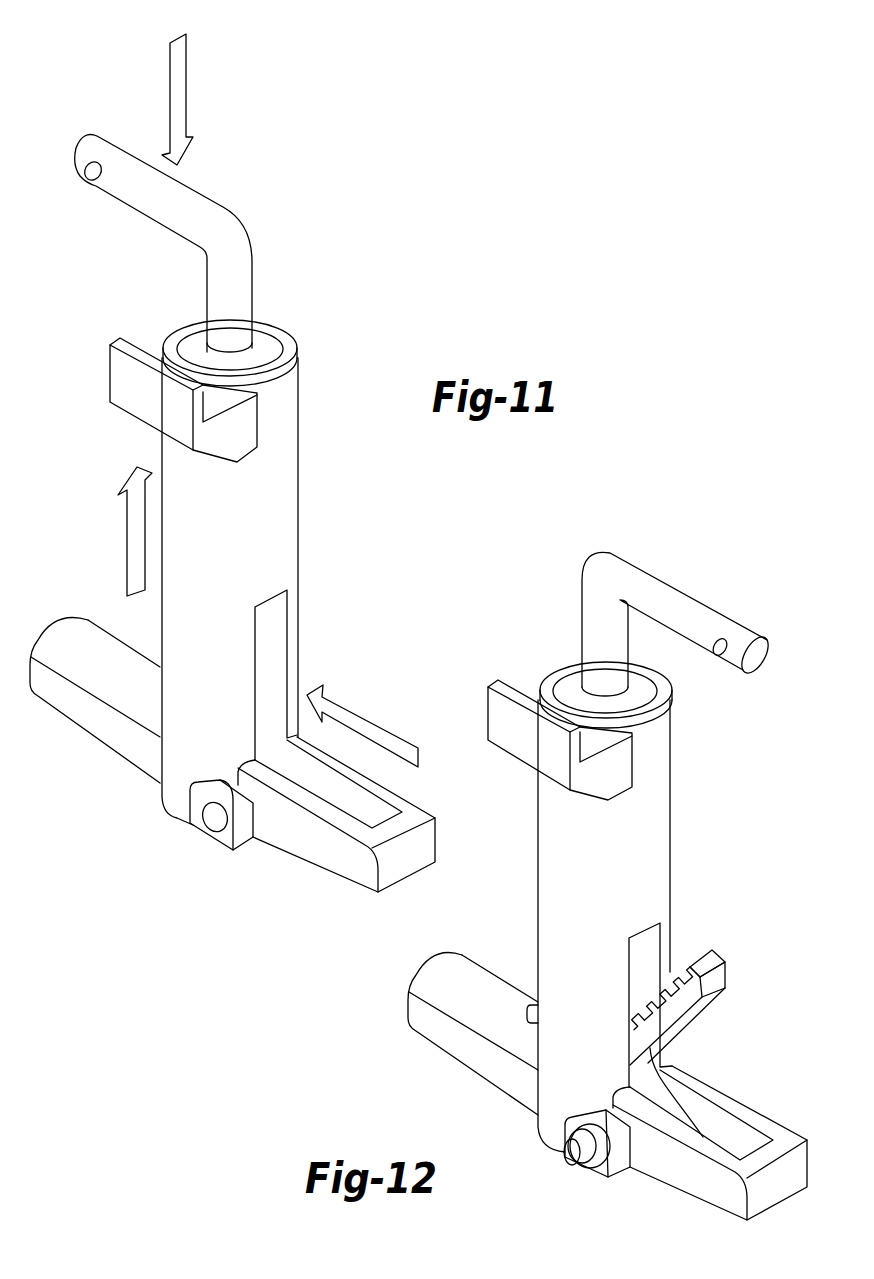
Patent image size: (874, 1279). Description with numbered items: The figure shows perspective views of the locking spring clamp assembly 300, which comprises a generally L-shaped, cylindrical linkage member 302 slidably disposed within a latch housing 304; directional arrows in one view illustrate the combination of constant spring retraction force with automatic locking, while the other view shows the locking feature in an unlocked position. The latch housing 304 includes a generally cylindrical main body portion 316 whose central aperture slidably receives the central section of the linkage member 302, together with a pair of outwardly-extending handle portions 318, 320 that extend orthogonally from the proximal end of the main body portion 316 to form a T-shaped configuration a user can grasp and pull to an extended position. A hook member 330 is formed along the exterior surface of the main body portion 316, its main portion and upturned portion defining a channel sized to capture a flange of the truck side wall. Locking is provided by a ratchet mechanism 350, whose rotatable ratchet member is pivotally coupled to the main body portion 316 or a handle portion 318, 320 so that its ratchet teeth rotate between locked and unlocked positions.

In FIG. 11, the locking spring clamp assembly 300 is at (95, 431).
In FIG. 11, the linkage member 302 is at (258, 294).
In FIG. 12, the linkage member 302 is at (575, 628).
In FIG. 11, the latch housing 304 is at (308, 556).
In FIG. 12, the latch housing 304 is at (680, 888).
In FIG. 12, the main body portion 316 is at (555, 927).
In FIG. 11, the handle portion 318 is at (100, 738).
In FIG. 12, the handle portion 318 is at (480, 1067).
In FIG. 11, the handle portion 320 is at (322, 863).
In FIG. 12, the handle portion 320 is at (692, 1192).
In FIG. 12, the hook member 330 is at (500, 703).
In FIG. 12, the ratchet mechanism 350 is at (698, 1010).